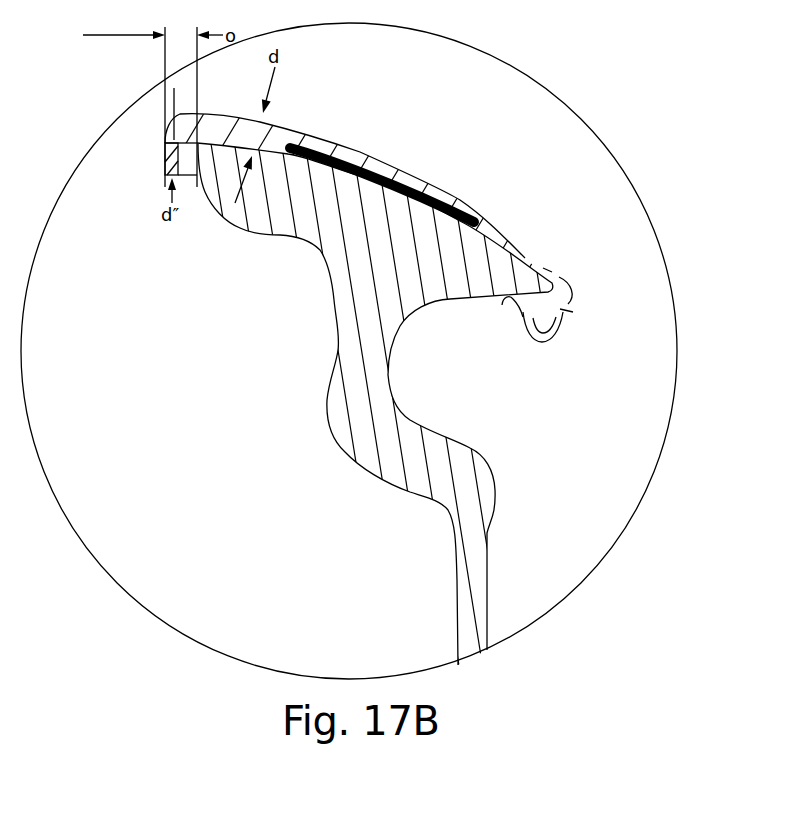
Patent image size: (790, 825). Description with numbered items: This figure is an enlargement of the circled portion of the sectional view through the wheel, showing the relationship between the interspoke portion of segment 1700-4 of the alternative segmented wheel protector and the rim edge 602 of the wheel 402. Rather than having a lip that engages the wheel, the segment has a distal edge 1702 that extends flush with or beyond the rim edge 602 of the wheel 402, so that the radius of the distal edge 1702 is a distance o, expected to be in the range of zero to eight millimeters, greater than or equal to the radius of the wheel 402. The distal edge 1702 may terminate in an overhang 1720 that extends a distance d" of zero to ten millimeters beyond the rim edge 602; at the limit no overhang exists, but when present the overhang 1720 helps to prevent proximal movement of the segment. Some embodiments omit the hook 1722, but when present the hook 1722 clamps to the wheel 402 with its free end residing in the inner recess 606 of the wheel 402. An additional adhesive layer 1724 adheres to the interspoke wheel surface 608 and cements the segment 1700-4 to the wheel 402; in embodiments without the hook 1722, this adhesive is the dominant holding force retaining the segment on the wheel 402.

The wheel 402 is at (328, 295).
The rim edge 602 is at (197, 165).
The inner recess 606 is at (500, 347).
The interspoke wheel surface 608 is at (300, 162).
The distal edge 1702 is at (170, 133).
The overhang 1720 is at (163, 153).
The hook 1722 is at (573, 308).
The additional adhesive layer 1724 is at (433, 208).
The segment 1700-4 is at (356, 110).